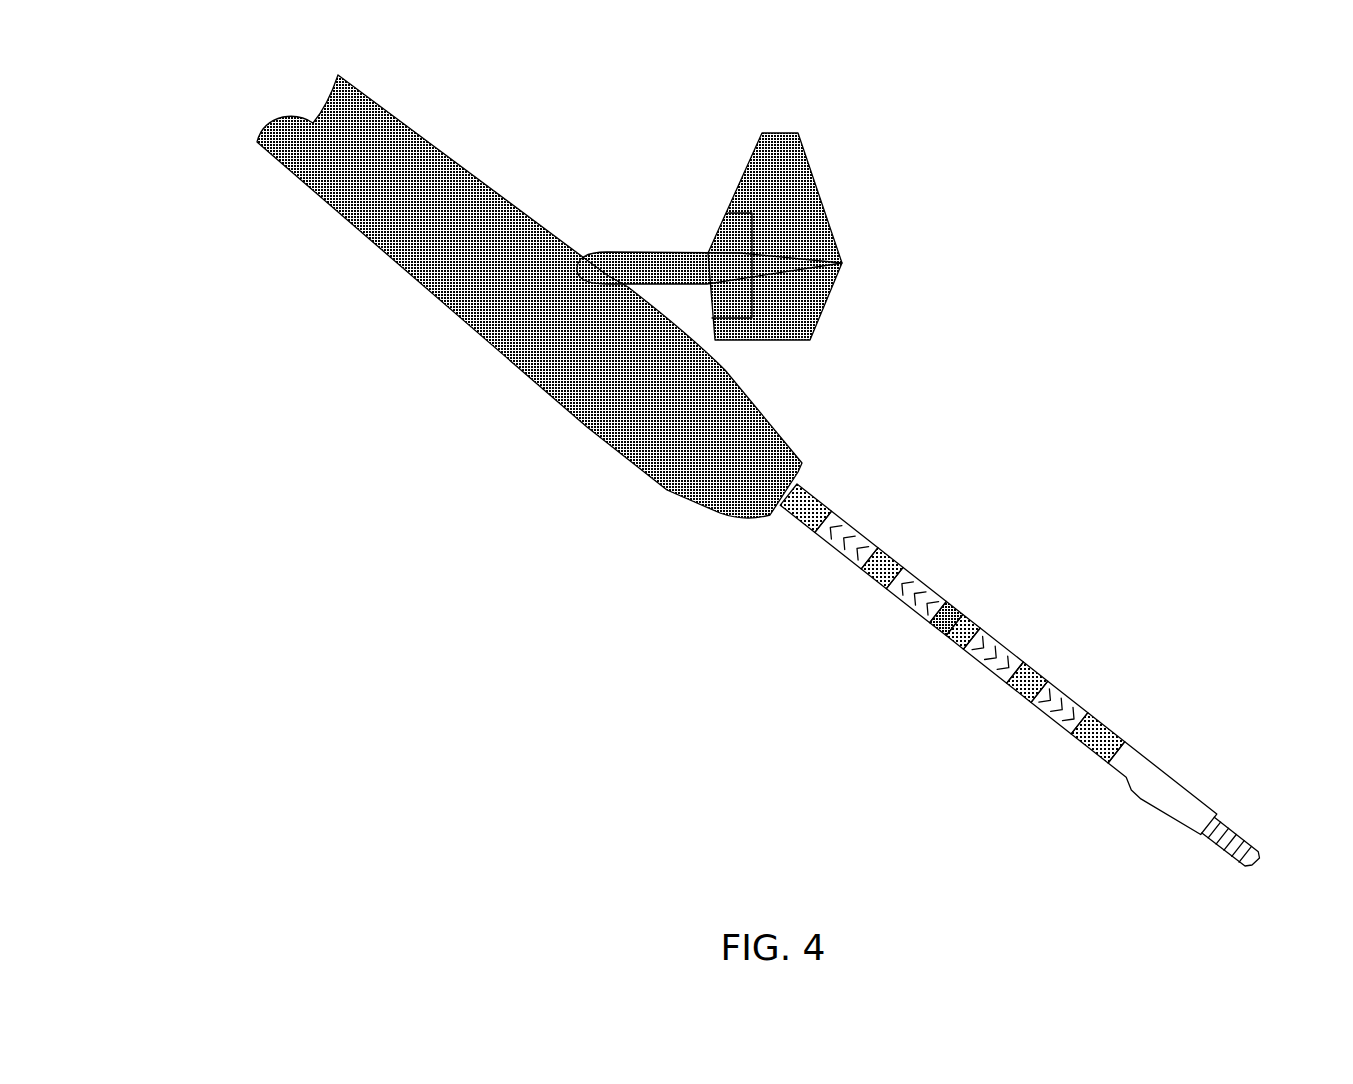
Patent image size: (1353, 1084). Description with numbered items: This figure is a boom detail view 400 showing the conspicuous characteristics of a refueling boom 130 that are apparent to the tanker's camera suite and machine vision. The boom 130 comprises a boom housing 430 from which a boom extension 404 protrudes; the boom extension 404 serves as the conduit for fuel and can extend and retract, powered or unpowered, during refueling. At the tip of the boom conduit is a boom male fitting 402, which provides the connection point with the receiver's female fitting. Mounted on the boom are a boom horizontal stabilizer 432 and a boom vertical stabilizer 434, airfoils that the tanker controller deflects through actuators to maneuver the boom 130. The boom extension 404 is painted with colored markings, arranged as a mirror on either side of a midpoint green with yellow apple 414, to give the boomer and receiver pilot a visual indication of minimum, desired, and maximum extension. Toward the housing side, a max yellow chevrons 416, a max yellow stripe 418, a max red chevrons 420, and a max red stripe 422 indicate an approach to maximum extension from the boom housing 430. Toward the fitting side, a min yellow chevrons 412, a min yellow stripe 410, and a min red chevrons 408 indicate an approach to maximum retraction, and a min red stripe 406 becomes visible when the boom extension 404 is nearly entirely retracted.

The boom detail view 400 is at (138, 118).
The boom 130 is at (1057, 308).
The boom housing 430 is at (552, 232).
The boom horizontal stabilizer 432 is at (648, 252).
The boom vertical stabilizer 434 is at (798, 185).
The max red stripe 422 is at (822, 507).
The max red chevrons 420 is at (843, 548).
The max yellow stripe 418 is at (893, 560).
The max yellow chevrons 416 is at (915, 610).
The midpoint green with yellow apple 414 is at (975, 610).
The min yellow chevrons 412 is at (985, 665).
The min yellow stripe 410 is at (1042, 684).
The min red chevrons 408 is at (1053, 722).
The min red stripe 406 is at (1107, 730).
The boom extension 404 is at (1168, 783).
The boom male fitting 402 is at (1262, 850).